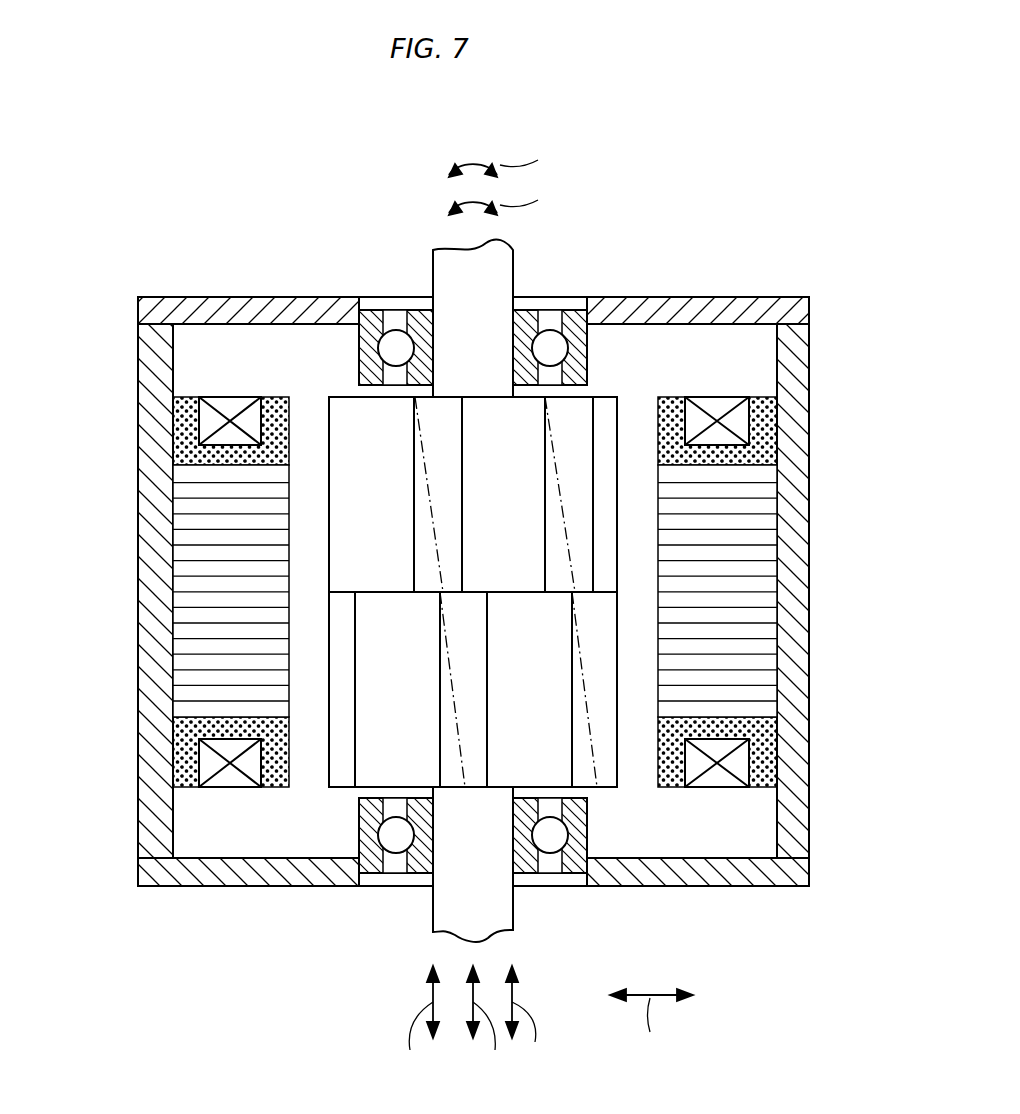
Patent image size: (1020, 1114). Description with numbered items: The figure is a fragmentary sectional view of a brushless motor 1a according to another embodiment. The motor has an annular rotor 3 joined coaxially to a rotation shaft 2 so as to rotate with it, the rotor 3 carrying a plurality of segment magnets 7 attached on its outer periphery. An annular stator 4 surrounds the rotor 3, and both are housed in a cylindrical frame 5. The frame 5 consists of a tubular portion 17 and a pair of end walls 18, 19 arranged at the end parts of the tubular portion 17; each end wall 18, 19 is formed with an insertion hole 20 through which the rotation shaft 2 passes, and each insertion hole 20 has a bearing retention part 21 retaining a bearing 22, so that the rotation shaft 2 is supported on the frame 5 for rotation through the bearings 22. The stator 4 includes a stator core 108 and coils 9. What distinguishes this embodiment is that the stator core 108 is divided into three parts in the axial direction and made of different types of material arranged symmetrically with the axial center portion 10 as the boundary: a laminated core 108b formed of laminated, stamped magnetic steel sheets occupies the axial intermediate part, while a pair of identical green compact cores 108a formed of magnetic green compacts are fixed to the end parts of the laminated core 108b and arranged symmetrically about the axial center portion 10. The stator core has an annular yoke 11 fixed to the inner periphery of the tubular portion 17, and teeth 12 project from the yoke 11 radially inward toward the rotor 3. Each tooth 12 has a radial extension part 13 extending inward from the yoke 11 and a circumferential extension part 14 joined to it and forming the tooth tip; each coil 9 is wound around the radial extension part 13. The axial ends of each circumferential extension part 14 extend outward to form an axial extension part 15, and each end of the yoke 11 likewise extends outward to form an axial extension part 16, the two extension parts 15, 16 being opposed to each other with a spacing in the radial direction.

The brushless motor 1a is at (203, 205).
The rotation shaft 2 is at (502, 284).
The rotor 3 is at (478, 588).
The stator 4 is at (480, 595).
The frame 5 is at (507, 594).
The segment magnets 7 is at (497, 437).
The coils 9 is at (237, 407).
The axial center portion 10 is at (480, 591).
The yoke 11 is at (480, 591).
The teeth 12 is at (480, 591).
The radial extension part 13 is at (208, 650).
The circumferential extension part 14 is at (277, 692).
The axial extension part 15 is at (278, 410).
The axial extension part 16 is at (185, 408).
The tubular portion 17 is at (795, 820).
The end wall 18 is at (693, 880).
The end wall 19 is at (720, 305).
The insertion hole 20 is at (565, 303).
The bearing retention part 21 is at (494, 595).
The bearing 22 is at (396, 335).
The stator core 108 is at (480, 595).
The green compact cores 108a is at (419, 595).
The laminated core 108b is at (480, 591).